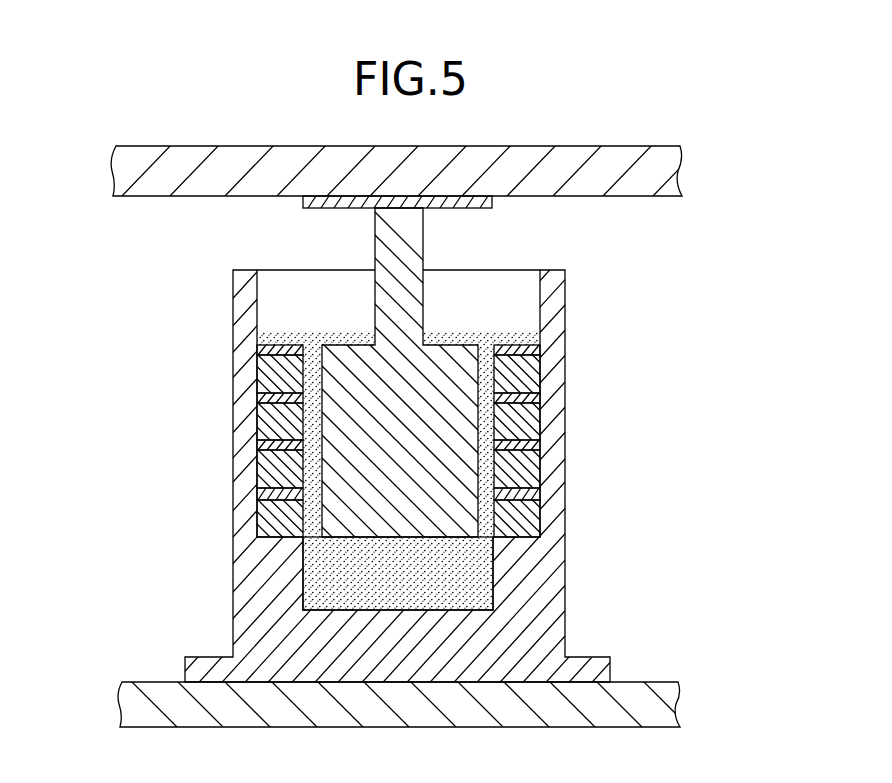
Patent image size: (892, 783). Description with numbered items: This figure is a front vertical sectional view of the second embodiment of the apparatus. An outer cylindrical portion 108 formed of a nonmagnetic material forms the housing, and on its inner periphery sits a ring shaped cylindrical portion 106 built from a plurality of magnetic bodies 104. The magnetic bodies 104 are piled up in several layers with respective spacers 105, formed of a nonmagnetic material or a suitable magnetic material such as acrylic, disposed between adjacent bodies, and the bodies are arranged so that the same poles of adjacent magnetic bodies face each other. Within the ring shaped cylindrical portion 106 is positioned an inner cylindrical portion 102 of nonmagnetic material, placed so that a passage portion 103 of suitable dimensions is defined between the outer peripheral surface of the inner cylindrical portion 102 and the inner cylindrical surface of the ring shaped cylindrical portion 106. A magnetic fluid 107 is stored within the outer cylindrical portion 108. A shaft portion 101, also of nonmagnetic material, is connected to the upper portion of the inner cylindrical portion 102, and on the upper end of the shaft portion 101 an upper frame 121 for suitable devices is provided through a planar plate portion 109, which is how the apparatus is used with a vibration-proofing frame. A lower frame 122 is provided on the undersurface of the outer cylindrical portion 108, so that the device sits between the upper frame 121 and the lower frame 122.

The shaft portion 101 is at (423, 240).
The inner cylindrical portion 102 is at (337, 537).
The passage portion 103 is at (318, 336).
The magnetic bodies 104 is at (263, 378).
The spacers 105 is at (284, 338).
The ring shaped cylindrical portion 106 is at (257, 520).
The magnetic fluid 107 is at (423, 588).
The outer cylindrical portion 108 is at (446, 476).
The planar plate portion 109 is at (325, 208).
The upper frame 121 is at (649, 185).
The lower frame 122 is at (665, 680).